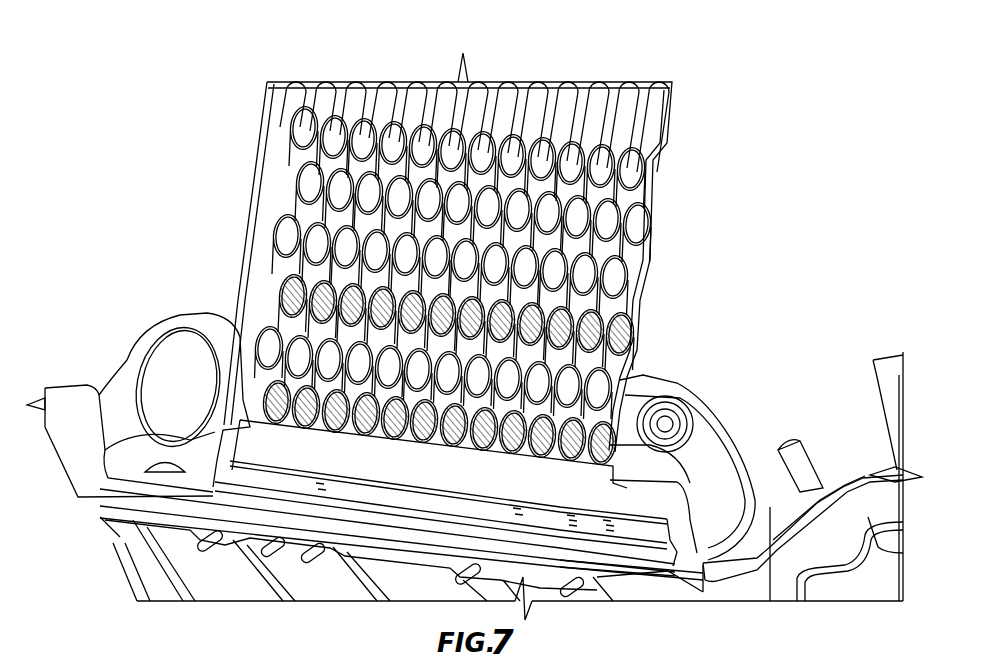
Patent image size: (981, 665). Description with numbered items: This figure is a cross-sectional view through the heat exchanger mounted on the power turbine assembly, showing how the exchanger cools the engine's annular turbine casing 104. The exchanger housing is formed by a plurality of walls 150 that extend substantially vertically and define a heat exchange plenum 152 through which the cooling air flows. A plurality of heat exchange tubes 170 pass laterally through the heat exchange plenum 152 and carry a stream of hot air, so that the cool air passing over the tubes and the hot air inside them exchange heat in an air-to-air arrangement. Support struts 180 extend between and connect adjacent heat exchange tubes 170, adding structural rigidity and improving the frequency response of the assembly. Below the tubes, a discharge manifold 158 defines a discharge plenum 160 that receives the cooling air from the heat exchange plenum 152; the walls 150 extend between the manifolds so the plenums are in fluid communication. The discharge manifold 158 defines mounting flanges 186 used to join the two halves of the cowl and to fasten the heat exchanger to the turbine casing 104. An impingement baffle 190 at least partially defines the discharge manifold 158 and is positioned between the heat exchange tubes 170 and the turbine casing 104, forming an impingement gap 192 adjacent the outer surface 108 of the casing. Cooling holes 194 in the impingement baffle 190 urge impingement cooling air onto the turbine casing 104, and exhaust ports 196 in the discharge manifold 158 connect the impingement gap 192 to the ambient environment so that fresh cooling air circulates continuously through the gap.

The turbine casing 104 is at (223, 484).
The outer surface of turbine casing 108 is at (633, 555).
The walls 150 is at (267, 188).
The heat exchange plenum 152 is at (586, 92).
The discharge manifold 158 is at (647, 472).
The discharge plenum 160 is at (553, 484).
The heat exchange tubes 170 is at (332, 115).
The support struts 180 is at (622, 236).
The mounting flanges 186 is at (728, 475).
The impingement baffle 190 is at (262, 488).
The impingement gap 192 is at (373, 533).
The cooling holes 194 is at (240, 455).
The exhaust ports 196 is at (157, 462).